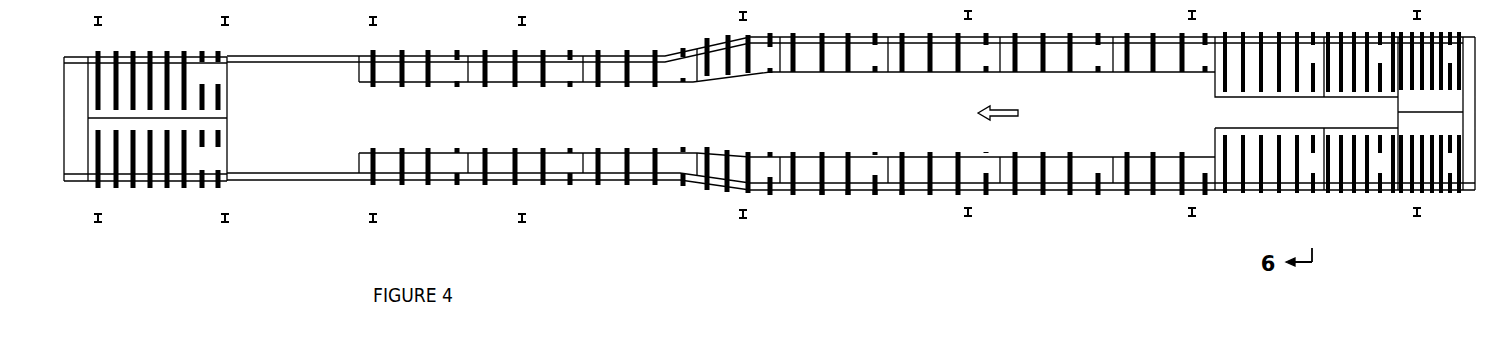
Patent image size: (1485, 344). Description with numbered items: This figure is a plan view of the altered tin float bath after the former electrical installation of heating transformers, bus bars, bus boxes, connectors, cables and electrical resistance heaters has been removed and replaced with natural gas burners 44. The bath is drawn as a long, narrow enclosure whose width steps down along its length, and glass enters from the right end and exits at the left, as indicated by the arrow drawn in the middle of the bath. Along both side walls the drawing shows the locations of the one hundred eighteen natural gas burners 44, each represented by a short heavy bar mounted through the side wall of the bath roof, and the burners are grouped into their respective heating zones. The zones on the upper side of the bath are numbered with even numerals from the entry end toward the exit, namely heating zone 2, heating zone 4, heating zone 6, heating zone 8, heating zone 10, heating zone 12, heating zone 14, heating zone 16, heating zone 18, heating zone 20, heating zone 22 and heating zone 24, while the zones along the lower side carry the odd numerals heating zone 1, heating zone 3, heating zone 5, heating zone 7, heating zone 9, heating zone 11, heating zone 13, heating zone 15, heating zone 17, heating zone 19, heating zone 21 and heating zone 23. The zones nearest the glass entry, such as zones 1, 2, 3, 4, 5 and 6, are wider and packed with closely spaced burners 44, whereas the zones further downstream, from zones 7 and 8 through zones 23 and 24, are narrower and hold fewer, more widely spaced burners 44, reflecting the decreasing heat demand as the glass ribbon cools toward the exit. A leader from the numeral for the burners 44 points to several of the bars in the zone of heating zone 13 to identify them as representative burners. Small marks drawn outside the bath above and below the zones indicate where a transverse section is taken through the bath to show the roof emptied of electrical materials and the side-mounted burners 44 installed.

The heating zone 1 is at (1430, 164).
The heating zone 2 is at (1430, 61).
The heating zone 3 is at (1360, 164).
The heating zone 4 is at (1360, 62).
The heating zone 5 is at (1269, 164).
The heating zone 6 is at (1269, 62).
The heating zone 7 is at (1166, 173).
The heating zone 8 is at (1166, 52).
The heating zone 9 is at (1058, 173).
The heating zone 10 is at (1060, 52).
The heating zone 11 is at (946, 173).
The heating zone 12 is at (946, 52).
The heating zone 13 is at (836, 173).
The heating zone 14 is at (836, 52).
The heating zone 15 is at (739, 171).
The heating zone 16 is at (739, 54).
The heating zone 17 is at (642, 166).
The heating zone 18 is at (643, 67).
The heating zone 19 is at (530, 166).
The heating zone 20 is at (530, 68).
The heating zone 21 is at (418, 166).
The heating zone 22 is at (418, 68).
The heating zone 23 is at (158, 159).
The heating zone 24 is at (158, 80).
The natural gas burner 44 is at (862, 214).